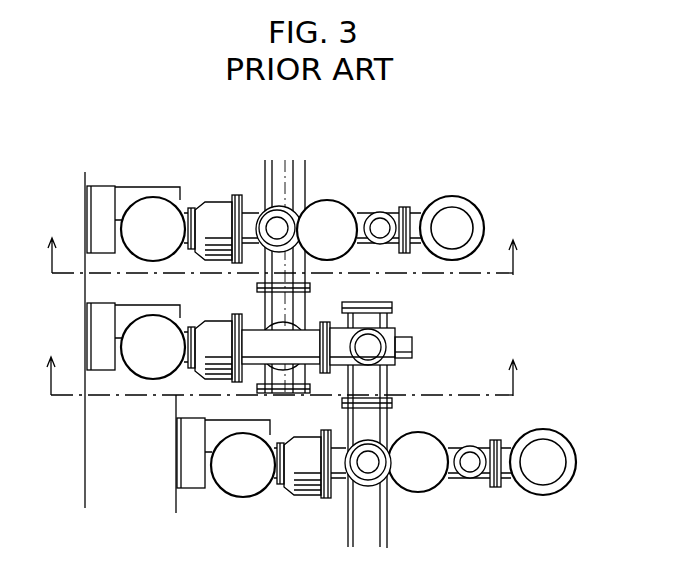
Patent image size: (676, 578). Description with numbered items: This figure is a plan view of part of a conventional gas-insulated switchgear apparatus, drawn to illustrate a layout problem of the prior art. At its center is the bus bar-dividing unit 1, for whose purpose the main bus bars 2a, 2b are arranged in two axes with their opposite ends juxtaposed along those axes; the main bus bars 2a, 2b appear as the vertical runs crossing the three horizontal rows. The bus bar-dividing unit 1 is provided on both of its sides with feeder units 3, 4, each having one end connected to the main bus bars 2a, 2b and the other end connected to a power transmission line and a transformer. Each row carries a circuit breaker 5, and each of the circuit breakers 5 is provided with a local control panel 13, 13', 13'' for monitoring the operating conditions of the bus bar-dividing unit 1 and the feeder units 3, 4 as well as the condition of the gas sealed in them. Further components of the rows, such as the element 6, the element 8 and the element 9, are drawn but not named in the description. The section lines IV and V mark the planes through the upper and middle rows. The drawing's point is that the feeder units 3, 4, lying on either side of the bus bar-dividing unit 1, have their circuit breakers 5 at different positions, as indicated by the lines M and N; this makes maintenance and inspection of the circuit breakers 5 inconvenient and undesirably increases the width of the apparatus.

The bus bar-dividing unit 1 is at (403, 324).
The main bus bar 2a is at (306, 173).
The main bus bar 2b is at (388, 375).
The feeder unit 3 is at (405, 190).
The feeder unit 4 is at (541, 428).
The circuit breaker 5 is at (150, 215).
The valve 6 is at (217, 218).
The pump 8 is at (330, 208).
The flanged ring connection 9 is at (452, 222).
The local control panel 13 is at (69, 210).
The local control panel 13' is at (69, 330).
The local control panel 13'' is at (157, 453).
The section line IV- IV is at (283, 241).
The section line V- V is at (282, 362).
The line M is at (85, 355).
The line N is at (167, 458).